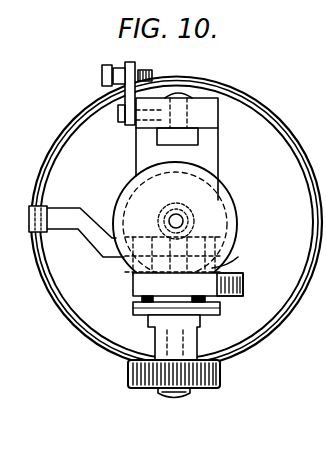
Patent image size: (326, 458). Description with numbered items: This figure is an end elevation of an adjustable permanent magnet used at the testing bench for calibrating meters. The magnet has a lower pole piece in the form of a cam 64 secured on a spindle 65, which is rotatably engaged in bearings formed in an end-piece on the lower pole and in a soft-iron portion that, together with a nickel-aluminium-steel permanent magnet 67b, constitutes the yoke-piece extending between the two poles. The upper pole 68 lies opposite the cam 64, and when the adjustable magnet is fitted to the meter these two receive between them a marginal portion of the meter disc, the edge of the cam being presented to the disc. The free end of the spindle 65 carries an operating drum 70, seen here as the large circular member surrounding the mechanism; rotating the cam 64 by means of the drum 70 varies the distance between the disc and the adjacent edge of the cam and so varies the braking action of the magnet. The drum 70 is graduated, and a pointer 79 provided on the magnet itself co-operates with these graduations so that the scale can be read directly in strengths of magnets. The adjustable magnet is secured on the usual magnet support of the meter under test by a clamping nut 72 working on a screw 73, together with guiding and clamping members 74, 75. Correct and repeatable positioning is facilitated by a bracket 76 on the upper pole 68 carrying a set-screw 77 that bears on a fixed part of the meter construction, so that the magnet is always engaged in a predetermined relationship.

The cam 64 is at (238, 203).
The spindle 65 is at (172, 219).
The nickel-aluminium-steel permanent magnet 67b is at (134, 157).
The upper pole 68 is at (213, 119).
The operating drum 70 is at (80, 129).
The clamping nut 72 is at (222, 373).
The screw 73 is at (176, 400).
The guiding and clamping member 74 is at (242, 279).
The guiding and clamping member 75 is at (220, 304).
The bracket 76 is at (124, 66).
The set-screw 77 is at (153, 74).
The pointer 79 is at (34, 206).